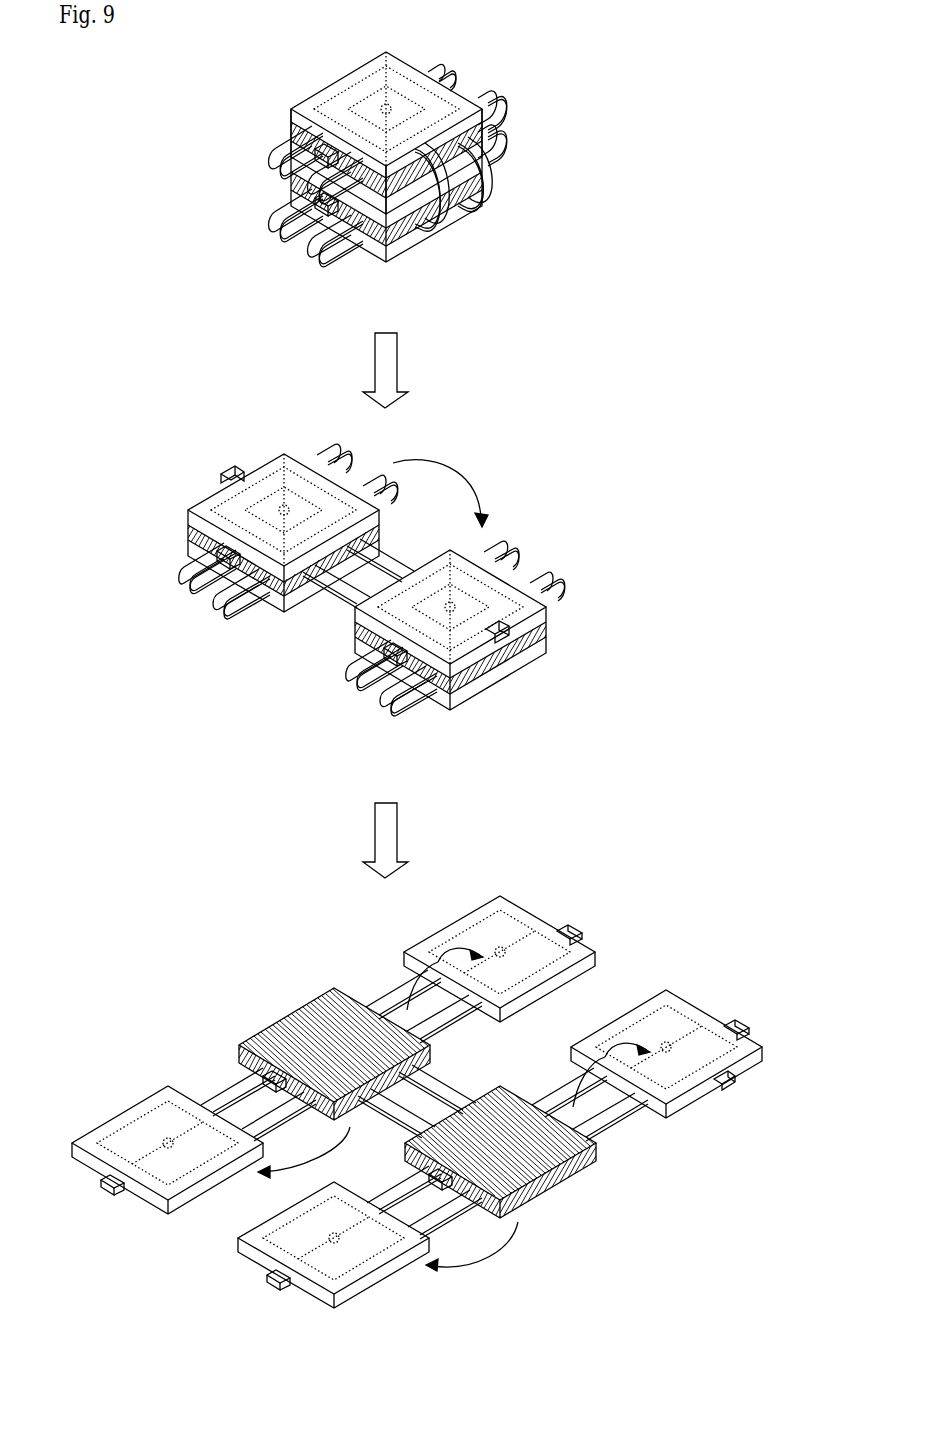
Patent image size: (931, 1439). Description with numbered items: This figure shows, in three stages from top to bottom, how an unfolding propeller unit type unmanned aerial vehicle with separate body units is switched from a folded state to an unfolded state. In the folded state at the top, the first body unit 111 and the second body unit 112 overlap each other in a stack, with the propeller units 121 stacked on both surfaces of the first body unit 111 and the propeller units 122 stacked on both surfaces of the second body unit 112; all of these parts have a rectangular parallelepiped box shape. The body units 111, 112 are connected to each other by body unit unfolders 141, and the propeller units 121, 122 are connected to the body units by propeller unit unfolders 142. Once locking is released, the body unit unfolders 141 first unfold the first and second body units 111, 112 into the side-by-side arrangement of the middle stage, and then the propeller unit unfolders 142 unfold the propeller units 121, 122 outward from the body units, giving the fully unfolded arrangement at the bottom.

The first body unit 111 is at (188, 528).
The second body unit 112 is at (547, 627).
The propeller unit 121 is at (522, 912).
The propeller unit 122 is at (687, 1008).
The body unit unfolder 141 is at (497, 182).
The propeller unit unfolder 142 is at (478, 100).